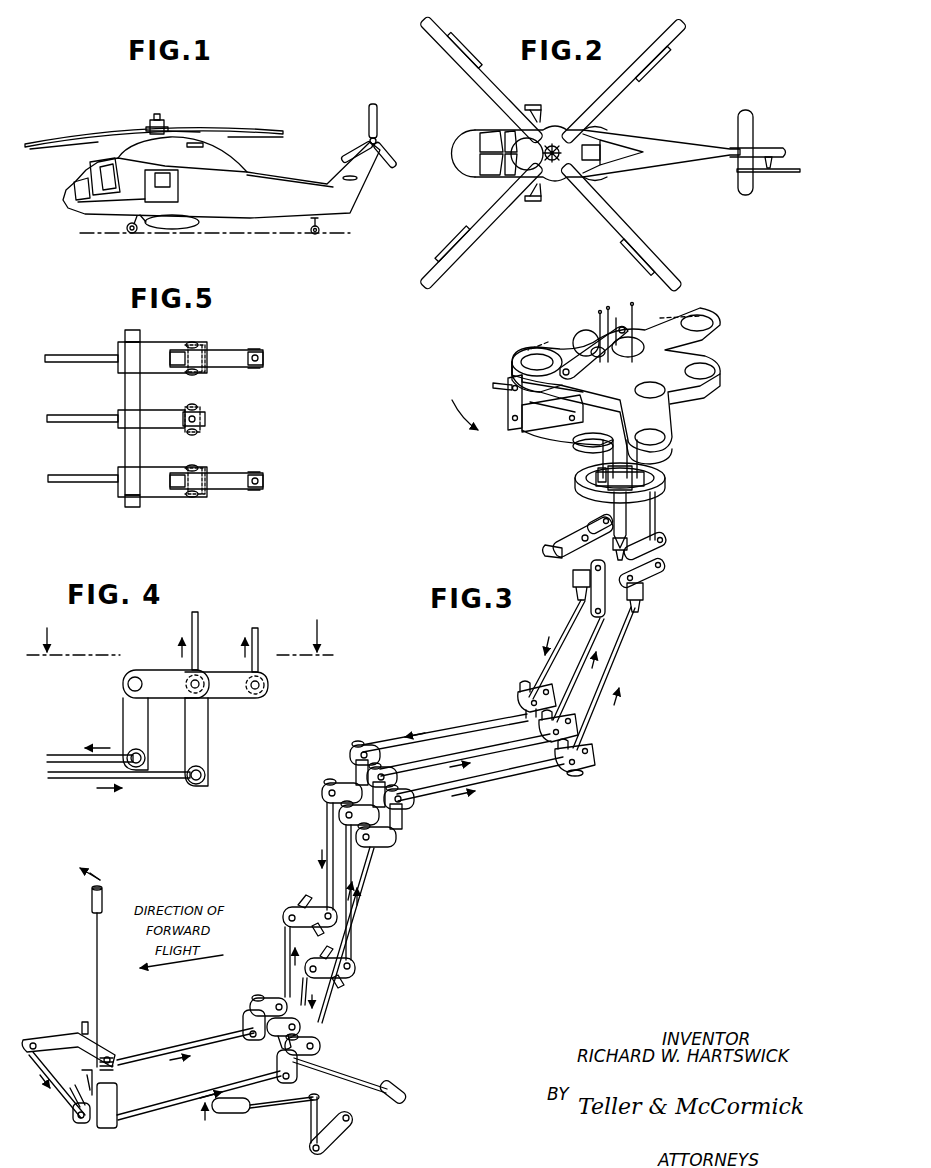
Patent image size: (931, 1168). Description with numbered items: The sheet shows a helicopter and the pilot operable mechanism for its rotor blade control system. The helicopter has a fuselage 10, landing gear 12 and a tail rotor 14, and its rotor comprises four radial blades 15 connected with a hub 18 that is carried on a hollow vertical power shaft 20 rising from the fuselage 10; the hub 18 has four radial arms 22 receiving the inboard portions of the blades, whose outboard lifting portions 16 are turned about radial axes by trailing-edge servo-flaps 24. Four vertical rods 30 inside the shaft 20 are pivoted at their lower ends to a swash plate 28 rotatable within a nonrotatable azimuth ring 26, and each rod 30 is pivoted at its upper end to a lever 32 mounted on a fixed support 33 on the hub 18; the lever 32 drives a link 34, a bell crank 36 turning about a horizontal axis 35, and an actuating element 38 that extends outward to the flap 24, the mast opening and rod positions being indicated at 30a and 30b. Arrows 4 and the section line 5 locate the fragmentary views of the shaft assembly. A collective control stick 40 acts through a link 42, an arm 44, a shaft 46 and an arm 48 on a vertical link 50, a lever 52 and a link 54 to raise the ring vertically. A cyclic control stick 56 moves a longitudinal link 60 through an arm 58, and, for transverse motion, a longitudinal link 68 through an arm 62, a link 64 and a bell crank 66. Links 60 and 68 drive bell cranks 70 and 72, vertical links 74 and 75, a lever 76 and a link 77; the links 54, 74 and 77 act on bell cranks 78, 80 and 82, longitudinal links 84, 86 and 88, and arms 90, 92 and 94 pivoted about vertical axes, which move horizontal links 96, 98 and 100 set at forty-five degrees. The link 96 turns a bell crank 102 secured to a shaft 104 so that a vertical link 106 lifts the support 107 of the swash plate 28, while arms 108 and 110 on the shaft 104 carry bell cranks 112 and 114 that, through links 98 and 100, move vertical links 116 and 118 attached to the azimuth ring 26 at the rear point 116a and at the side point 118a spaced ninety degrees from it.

In FIG. 1, the fuselage 10 is at (220, 199).
In FIG. 2, the fuselage 10 is at (490, 182).
In FIG. 1, the landing gear 12 is at (126, 232).
In FIG. 1, the tail rotor 14 is at (379, 152).
In FIG. 2, the tail rotor 14 is at (787, 174).
In FIG. 1, the rotor blade 15 is at (74, 133).
In FIG. 2, the rotor blade 15 is at (495, 77).
In FIG. 2, the outboard lifting portion of blade 16 is at (456, 64).
In FIG. 1, the hub 18 is at (159, 118).
In FIG. 2, the hub 18 is at (553, 145).
In FIG. 3, the hub 18 is at (695, 415).
In FIG. 1, the vertical power shaft 20 is at (198, 134).
In FIG. 3, the vertical power shaft 20 is at (580, 442).
In FIG. 3, the radial arm of hub 22 is at (516, 357).
In FIG. 1, the aerodynamic servo-flap 24 is at (61, 143).
In FIG. 2, the aerodynamic servo-flap 24 is at (656, 70).
In FIG. 3, the azimuth ring 26 is at (660, 480).
In FIG. 3, the swash plate 28 is at (590, 478).
In FIG. 3, the vertical rod 30 is at (633, 318).
In FIG. 3, the mast opening 30a is at (645, 360).
In FIG. 3, the control rod 30b is at (602, 312).
In FIG. 3, the lever 32 is at (607, 325).
In FIG. 3, the fixed support 33 is at (576, 336).
In FIG. 3, the link 34 is at (584, 403).
In FIG. 3, the horizontal axis 35 is at (530, 436).
In FIG. 3, the bell crank 36 is at (507, 410).
In FIG. 3, the actuating element 38 is at (496, 382).
In FIG. 3, the arrows 4 4 is at (680, 599).
In FIG. 4, the line 5— 5 is at (180, 632).
In FIG. 3, the collective control stick 40 is at (237, 1112).
In FIG. 3, the link 42 is at (309, 1125).
In FIG. 3, the arm 44 is at (337, 1138).
In FIG. 3, the shaft 46 is at (322, 1082).
In FIG. 3, the arm 48 is at (276, 1042).
In FIG. 3, the vertical link 50 is at (312, 985).
In FIG. 3, the lever 52 is at (348, 972).
In FIG. 3, the link 54 is at (360, 849).
In FIG. 3, the cyclic control stick 56 is at (90, 905).
In FIG. 3, the arm 58 is at (118, 1096).
In FIG. 3, the longitudinal link 60 is at (166, 1100).
In FIG. 3, the arm 62 is at (76, 1124).
In FIG. 3, the link 64 is at (56, 1096).
In FIG. 3, the bell crank 66 is at (50, 1038).
In FIG. 3, the longitudinal link 68 is at (168, 1050).
In FIG. 3, the bell crank 70 is at (322, 1048).
In FIG. 3, the bell crank 72 is at (266, 1002).
In FIG. 3, the vertical link 74 is at (358, 868).
In FIG. 3, the vertical link 75 is at (283, 952).
In FIG. 3, the lever 76 is at (314, 904).
In FIG. 3, the link 77 is at (326, 830).
In FIG. 3, the bell crank 78 is at (390, 780).
In FIG. 3, the bell crank 80 is at (403, 812).
In FIG. 3, the bell crank 82 is at (345, 783).
In FIG. 3, the longitudinal link 84 is at (492, 750).
In FIG. 3, the longitudinal link 86 is at (530, 788).
In FIG. 3, the longitudinal link 88 is at (468, 726).
In FIG. 3, the arm 90 is at (540, 729).
In FIG. 3, the arm 92 is at (593, 768).
In FIG. 3, the arm 94 is at (518, 698).
In FIG. 3, the horizontal link 96 is at (584, 668).
In FIG. 4, the horizontal link 96 is at (68, 753).
In FIG. 5, the horizontal link 96 is at (70, 415).
In FIG. 3, the horizontal link 98 is at (617, 668).
In FIG. 4, the horizontal link 98 is at (162, 780).
In FIG. 5, the horizontal link 98 is at (70, 475).
In FIG. 3, the horizontal link 100 is at (563, 649).
In FIG. 5, the horizontal link 100 is at (68, 352).
In FIG. 3, the bell crank 102 is at (590, 598).
In FIG. 4, the bell crank 102 is at (128, 719).
In FIG. 5, the bell crank 102 is at (160, 412).
In FIG. 3, the shaft 104 is at (545, 551).
In FIG. 4, the shaft 104 is at (130, 684).
In FIG. 5, the shaft 104 is at (124, 392).
In FIG. 3, the vertical link 106 is at (630, 543).
In FIG. 4, the vertical link 106 is at (200, 648).
In FIG. 5, the vertical link 106 is at (205, 418).
In FIG. 3, the support 107 is at (630, 505).
In FIG. 3, the arm 108 is at (640, 577).
In FIG. 4, the arm 108 is at (163, 673).
In FIG. 5, the arm 108 is at (158, 492).
In FIG. 3, the arm 110 is at (565, 558).
In FIG. 5, the arm 110 is at (160, 348).
In FIG. 3, the bell crank 112 is at (663, 552).
In FIG. 4, the bell crank 112 is at (232, 692).
In FIG. 5, the bell crank 112 is at (218, 492).
In FIG. 3, the bell crank 114 is at (588, 525).
In FIG. 5, the bell crank 114 is at (218, 348).
In FIG. 3, the vertical link 116 is at (660, 512).
In FIG. 4, the vertical link 116 is at (260, 652).
In FIG. 5, the vertical link 116 is at (264, 478).
In FIG. 3, the point of connection 116a is at (655, 462).
In FIG. 3, the vertical link 118 is at (597, 510).
In FIG. 5, the vertical link 118 is at (264, 356).
In FIG. 3, the point of connection 118a is at (560, 475).